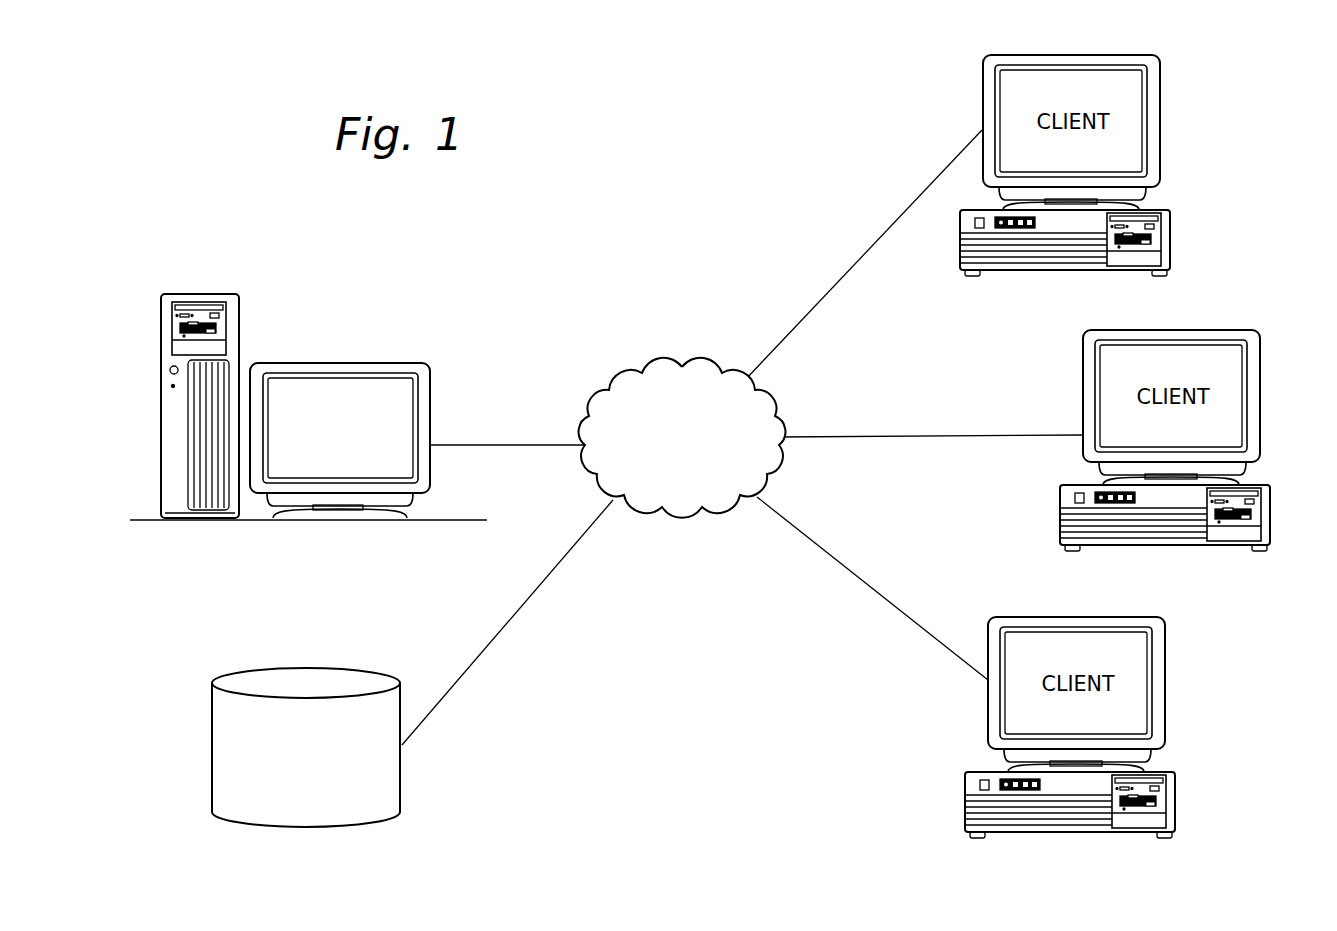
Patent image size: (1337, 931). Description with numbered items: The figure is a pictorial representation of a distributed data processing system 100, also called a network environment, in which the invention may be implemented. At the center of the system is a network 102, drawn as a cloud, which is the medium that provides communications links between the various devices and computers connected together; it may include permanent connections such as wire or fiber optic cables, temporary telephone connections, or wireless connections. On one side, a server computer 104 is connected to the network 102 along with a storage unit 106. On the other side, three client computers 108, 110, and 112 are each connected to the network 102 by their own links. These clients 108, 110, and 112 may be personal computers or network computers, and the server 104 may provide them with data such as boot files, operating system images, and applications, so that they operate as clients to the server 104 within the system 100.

The distributed data processing system 100 is at (458, 231).
The network 102 is at (673, 353).
The server computer 104 is at (335, 362).
The storage unit 106 is at (212, 745).
The client computer 108 is at (1162, 117).
The client computer 110 is at (1262, 393).
The client computer 112 is at (1167, 677).